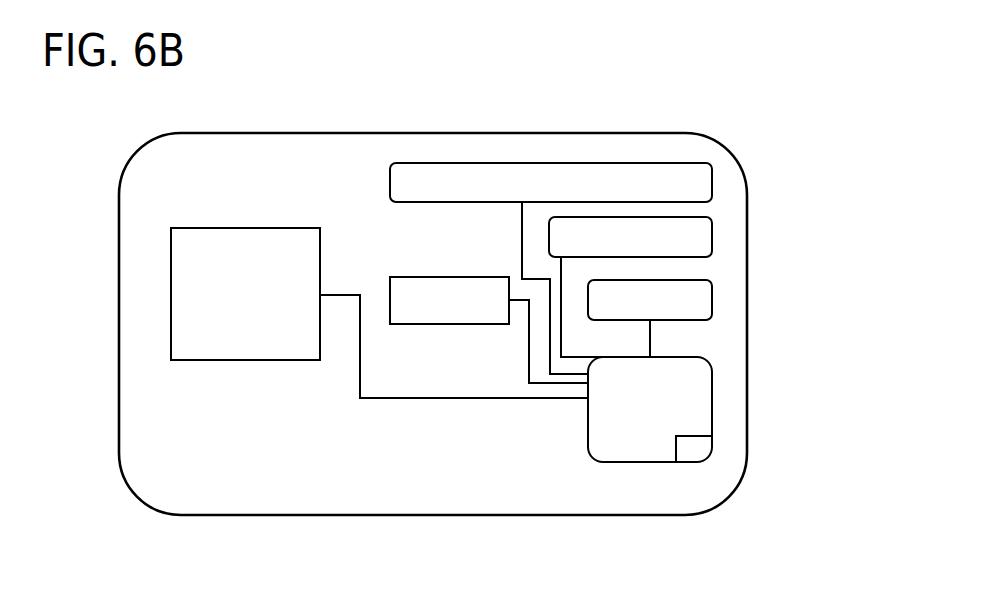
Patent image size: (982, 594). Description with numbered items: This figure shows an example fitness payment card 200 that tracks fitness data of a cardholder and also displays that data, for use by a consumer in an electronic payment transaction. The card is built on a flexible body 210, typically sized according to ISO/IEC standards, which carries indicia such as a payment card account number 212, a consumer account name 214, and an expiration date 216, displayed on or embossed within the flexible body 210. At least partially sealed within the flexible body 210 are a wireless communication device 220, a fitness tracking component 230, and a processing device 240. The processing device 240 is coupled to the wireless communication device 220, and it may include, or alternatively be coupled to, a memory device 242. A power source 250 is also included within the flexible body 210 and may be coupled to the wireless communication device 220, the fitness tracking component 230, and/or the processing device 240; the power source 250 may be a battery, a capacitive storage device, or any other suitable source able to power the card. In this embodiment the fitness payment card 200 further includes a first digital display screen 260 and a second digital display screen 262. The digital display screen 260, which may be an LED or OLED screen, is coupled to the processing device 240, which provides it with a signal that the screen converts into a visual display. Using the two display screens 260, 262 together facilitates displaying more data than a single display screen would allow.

The fitness payment card 200 is at (713, 95).
The flexible body 210 is at (222, 515).
The payment card account number 212 is at (199, 422).
The consumer account name 214 is at (199, 462).
The expiration date 216 is at (483, 486).
The wireless communication device 220 is at (712, 298).
The fitness tracking component 230 is at (190, 228).
The processing device 240 is at (712, 383).
The memory device 242 is at (712, 447).
The power source 250 is at (407, 277).
The digital display screen 260 is at (712, 187).
The second digital display screen 262 is at (712, 240).